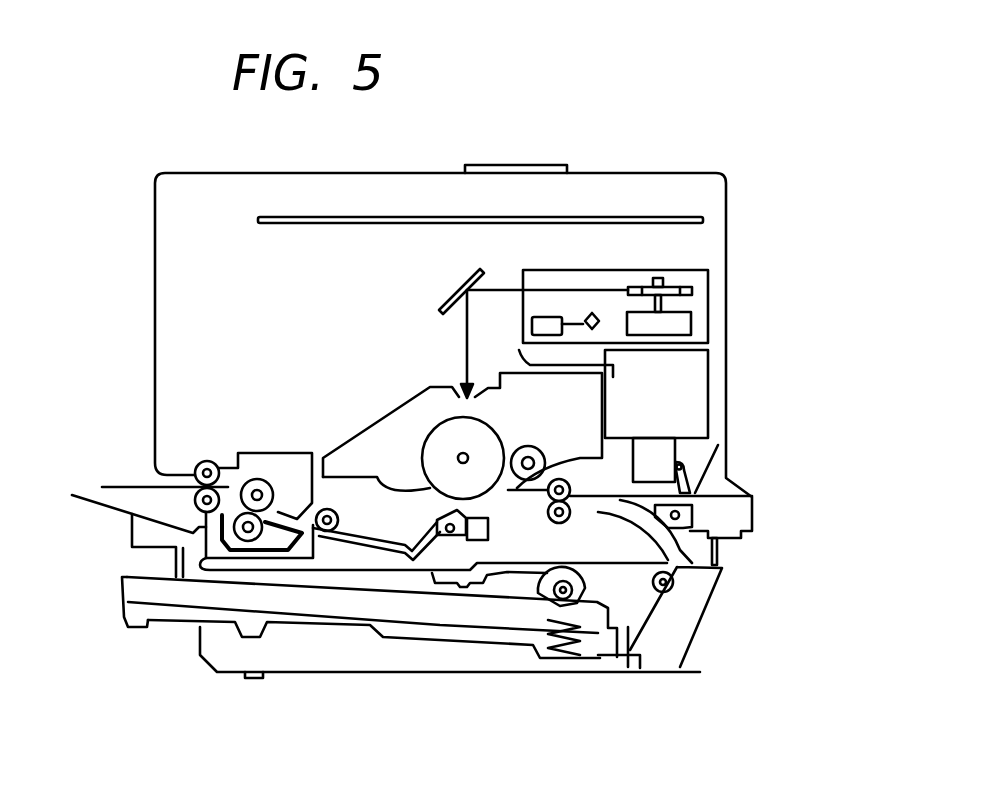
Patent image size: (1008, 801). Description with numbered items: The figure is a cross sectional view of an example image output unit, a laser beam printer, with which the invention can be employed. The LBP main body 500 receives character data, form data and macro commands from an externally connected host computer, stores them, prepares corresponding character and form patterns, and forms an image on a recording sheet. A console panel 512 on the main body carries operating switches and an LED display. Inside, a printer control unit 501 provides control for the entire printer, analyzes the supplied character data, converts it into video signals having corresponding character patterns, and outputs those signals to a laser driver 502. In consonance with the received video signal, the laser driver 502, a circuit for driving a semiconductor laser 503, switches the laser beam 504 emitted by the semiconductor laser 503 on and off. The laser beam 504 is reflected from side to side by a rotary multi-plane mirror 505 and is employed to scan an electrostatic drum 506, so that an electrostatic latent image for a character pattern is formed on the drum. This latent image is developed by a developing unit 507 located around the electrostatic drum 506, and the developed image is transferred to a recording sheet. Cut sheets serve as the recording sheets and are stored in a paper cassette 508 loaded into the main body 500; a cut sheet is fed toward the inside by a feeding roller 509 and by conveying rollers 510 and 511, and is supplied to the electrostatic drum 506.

The LBP main body 500 is at (673, 172).
The printer control unit 501 is at (703, 220).
The laser driver 502 is at (532, 328).
The semiconductor laser 503 is at (596, 330).
The laser beam 504 is at (603, 289).
The rotary multi-plane mirror 505 is at (692, 289).
The electrostatic drum 506 is at (432, 422).
The developing unit 507 is at (362, 440).
The paper cassette 508 is at (122, 617).
The feeding roller 509 is at (545, 593).
The conveying roller 510 is at (672, 570).
The conveying roller 511 is at (580, 518).
The console panel 512 is at (547, 165).